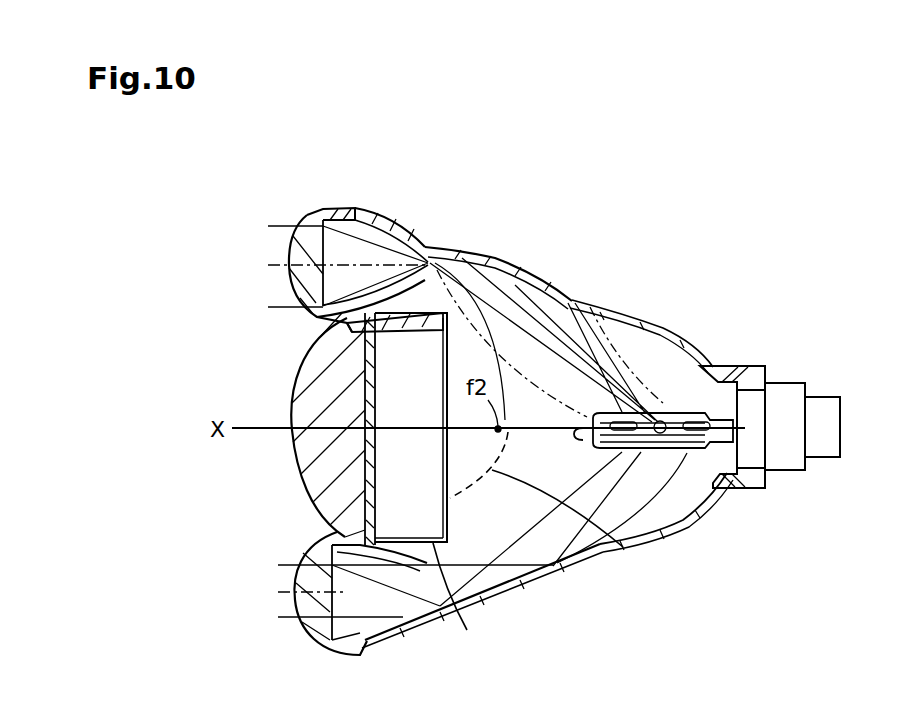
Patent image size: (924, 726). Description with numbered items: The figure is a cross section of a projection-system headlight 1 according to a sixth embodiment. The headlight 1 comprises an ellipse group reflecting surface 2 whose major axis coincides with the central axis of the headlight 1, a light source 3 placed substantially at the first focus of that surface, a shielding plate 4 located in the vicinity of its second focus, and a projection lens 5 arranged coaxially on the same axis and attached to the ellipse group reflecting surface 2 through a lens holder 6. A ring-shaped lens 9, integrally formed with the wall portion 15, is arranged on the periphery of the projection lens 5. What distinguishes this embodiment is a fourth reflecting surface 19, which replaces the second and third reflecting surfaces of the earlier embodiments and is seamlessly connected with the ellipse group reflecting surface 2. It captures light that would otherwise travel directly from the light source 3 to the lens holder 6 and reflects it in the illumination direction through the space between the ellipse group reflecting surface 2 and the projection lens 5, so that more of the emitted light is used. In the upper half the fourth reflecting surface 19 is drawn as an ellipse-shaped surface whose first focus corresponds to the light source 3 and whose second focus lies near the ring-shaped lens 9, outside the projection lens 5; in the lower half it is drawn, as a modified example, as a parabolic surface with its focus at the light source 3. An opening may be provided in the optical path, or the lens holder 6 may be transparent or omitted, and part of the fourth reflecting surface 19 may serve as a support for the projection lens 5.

The headlight 1 is at (692, 260).
The ellipse group reflecting surface 2 is at (685, 522).
The light source 3 is at (713, 495).
The shielding plate 4 is at (623, 547).
The projection lens 5 is at (327, 487).
The lens holder 6 is at (453, 599).
The ring-shaped lens 9 is at (305, 248).
The wall portion 15 is at (375, 223).
The fourth reflecting surface 19 is at (523, 270).